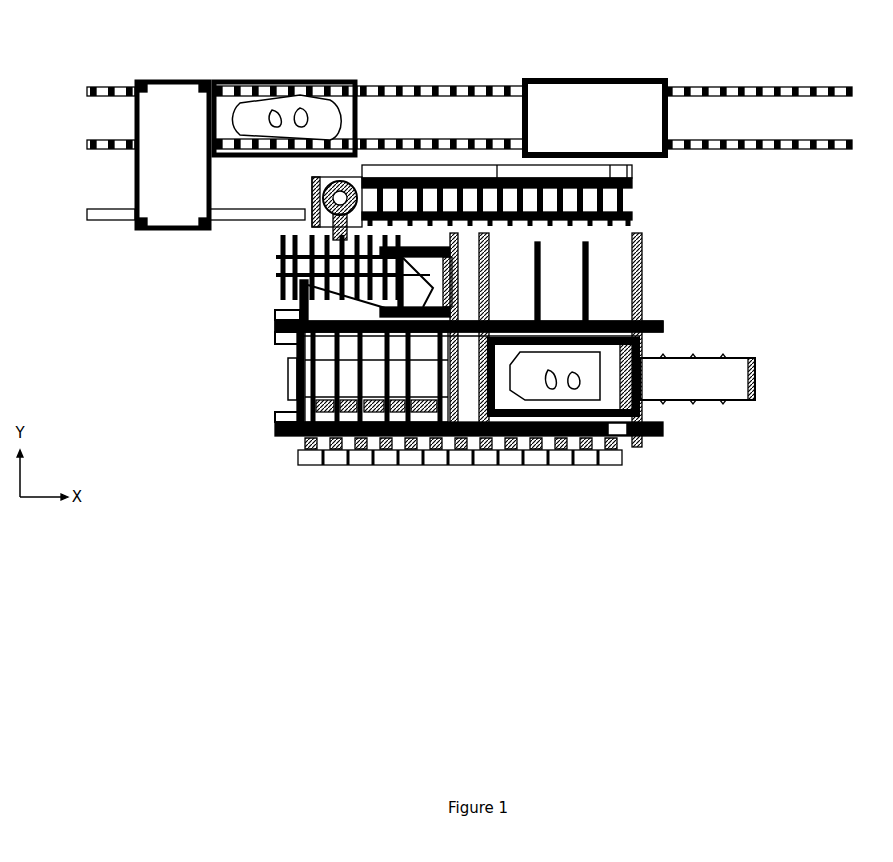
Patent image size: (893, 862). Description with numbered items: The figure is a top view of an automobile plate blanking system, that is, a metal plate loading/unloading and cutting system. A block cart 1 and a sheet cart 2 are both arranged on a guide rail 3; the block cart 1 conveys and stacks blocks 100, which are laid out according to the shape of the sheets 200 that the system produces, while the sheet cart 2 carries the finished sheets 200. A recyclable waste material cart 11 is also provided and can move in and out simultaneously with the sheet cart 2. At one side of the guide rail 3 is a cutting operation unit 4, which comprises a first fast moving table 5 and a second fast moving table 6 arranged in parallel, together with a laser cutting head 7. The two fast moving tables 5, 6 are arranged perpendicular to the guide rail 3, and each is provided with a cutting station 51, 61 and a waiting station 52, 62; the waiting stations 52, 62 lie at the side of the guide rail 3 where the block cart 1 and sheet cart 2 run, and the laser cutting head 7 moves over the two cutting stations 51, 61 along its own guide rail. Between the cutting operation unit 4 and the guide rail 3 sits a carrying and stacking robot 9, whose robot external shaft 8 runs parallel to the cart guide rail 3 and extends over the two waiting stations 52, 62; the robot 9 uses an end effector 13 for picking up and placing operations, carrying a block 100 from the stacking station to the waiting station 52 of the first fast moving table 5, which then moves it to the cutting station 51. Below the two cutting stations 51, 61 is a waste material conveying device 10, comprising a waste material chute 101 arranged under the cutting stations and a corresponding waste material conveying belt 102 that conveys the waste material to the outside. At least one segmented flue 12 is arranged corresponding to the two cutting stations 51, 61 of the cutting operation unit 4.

The block cart 1 is at (627, 80).
The sheet cart 2 is at (288, 82).
The guide rail 3 is at (450, 90).
The cutting operation unit 4 is at (675, 298).
The first fast moving table 5 is at (278, 432).
The second fast moving table 6 is at (640, 440).
The laser cutting head 7 is at (570, 452).
The robot external shaft 8 is at (633, 190).
The carrying and stacking robot 9 is at (308, 210).
The waste material conveying device 10 is at (715, 357).
The recyclable waste material cart 11 is at (166, 108).
The segmented flue 12 is at (378, 382).
The end effector 13 is at (285, 283).
The cutting station 51 is at (287, 377).
The waiting station 52 is at (290, 302).
The cutting station 61 is at (638, 356).
The waiting station 62 is at (590, 272).
The block 100 is at (607, 108).
The waste material chute 101 is at (421, 456).
The waste material conveying belt 102 is at (693, 378).
The sheet 200 is at (265, 97).